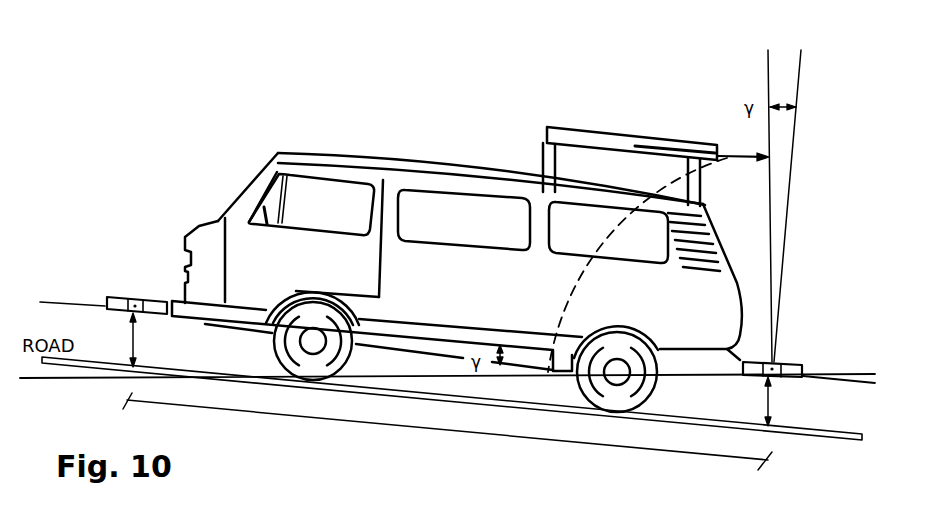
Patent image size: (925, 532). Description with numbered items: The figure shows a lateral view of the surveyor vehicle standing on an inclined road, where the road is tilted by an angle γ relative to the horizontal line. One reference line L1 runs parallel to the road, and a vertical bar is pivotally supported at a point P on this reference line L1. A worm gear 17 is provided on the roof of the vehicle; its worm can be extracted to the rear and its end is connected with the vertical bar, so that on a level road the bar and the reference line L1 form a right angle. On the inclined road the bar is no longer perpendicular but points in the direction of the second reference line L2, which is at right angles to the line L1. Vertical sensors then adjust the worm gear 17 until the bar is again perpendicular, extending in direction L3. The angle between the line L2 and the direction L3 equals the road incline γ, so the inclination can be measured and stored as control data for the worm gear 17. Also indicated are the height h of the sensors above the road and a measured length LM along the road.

The worm gear 17 is at (590, 136).
The first reference line L1 is at (103, 298).
The pivot point P is at (772, 354).
The second reference line L2 is at (797, 191).
The perpendicular direction L3 is at (758, 191).
The sensor height above road h is at (449, 369).
The measured length LM is at (447, 431).